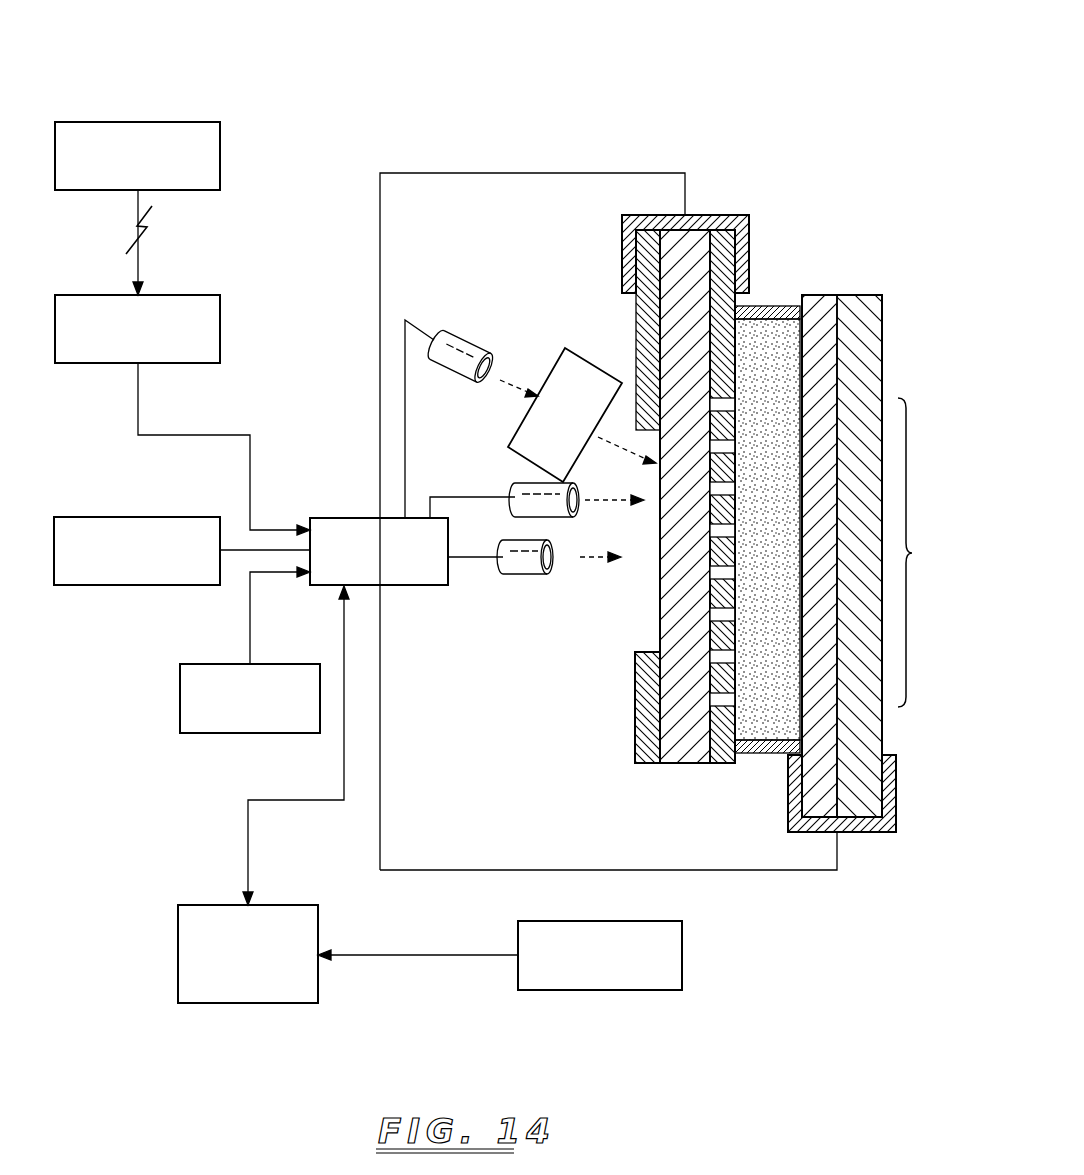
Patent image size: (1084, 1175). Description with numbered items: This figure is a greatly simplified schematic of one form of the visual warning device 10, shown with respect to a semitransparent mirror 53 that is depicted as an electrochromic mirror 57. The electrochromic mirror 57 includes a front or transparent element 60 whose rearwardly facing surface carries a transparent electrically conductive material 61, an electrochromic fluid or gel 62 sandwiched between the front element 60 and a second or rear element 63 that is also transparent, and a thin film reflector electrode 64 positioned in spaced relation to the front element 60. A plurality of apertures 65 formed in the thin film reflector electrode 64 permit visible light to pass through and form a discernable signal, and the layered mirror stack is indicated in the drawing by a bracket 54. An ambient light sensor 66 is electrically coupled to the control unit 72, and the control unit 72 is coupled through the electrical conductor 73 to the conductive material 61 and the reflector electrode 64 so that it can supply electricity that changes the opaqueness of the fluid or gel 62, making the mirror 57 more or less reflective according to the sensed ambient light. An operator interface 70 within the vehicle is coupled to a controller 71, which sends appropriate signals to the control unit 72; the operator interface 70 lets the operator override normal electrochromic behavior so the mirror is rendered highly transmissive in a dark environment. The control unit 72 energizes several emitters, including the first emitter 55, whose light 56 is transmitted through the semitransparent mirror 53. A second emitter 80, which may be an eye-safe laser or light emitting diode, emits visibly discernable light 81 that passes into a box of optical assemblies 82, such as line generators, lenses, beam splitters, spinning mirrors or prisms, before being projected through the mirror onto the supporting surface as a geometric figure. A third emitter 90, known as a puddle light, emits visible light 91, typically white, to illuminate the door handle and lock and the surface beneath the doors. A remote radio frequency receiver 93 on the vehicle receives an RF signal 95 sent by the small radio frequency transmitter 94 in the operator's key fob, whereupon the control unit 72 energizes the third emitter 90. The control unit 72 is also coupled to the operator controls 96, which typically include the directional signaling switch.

The visual warning device 10 is at (714, 78).
The semitransparent mirror 53 is at (918, 440).
The cover and wall assembly 54 is at (922, 552).
The first emitter 55 is at (525, 498).
The light 56 is at (600, 503).
The electrochromic mirror 57 is at (882, 305).
The front or transparent element 60 is at (862, 797).
The transparent electrically conductive material 61 is at (818, 792).
The electrochromic fluid or gel 62 is at (768, 693).
The second or rear element 63 is at (624, 693).
The thin film reflector electrode 64 is at (720, 730).
The apertures 65 is at (763, 447).
The ambient light sensor 66 is at (180, 698).
The operator interface 70 is at (600, 990).
The controller 71 is at (248, 1003).
The control unit 72 is at (345, 517).
The electrical conductor 73 is at (532, 173).
The second emitter 80 is at (457, 345).
The visibly discernable light 81 is at (617, 446).
The optical assemblies 82 is at (572, 372).
The third emitter 90 is at (527, 562).
The visible light 91 is at (582, 560).
The remote radio frequency receiver 93 is at (221, 328).
The radio frequency transmitter 94 is at (221, 154).
The RF signal 95 is at (146, 227).
The operator controls 96 is at (137, 517).